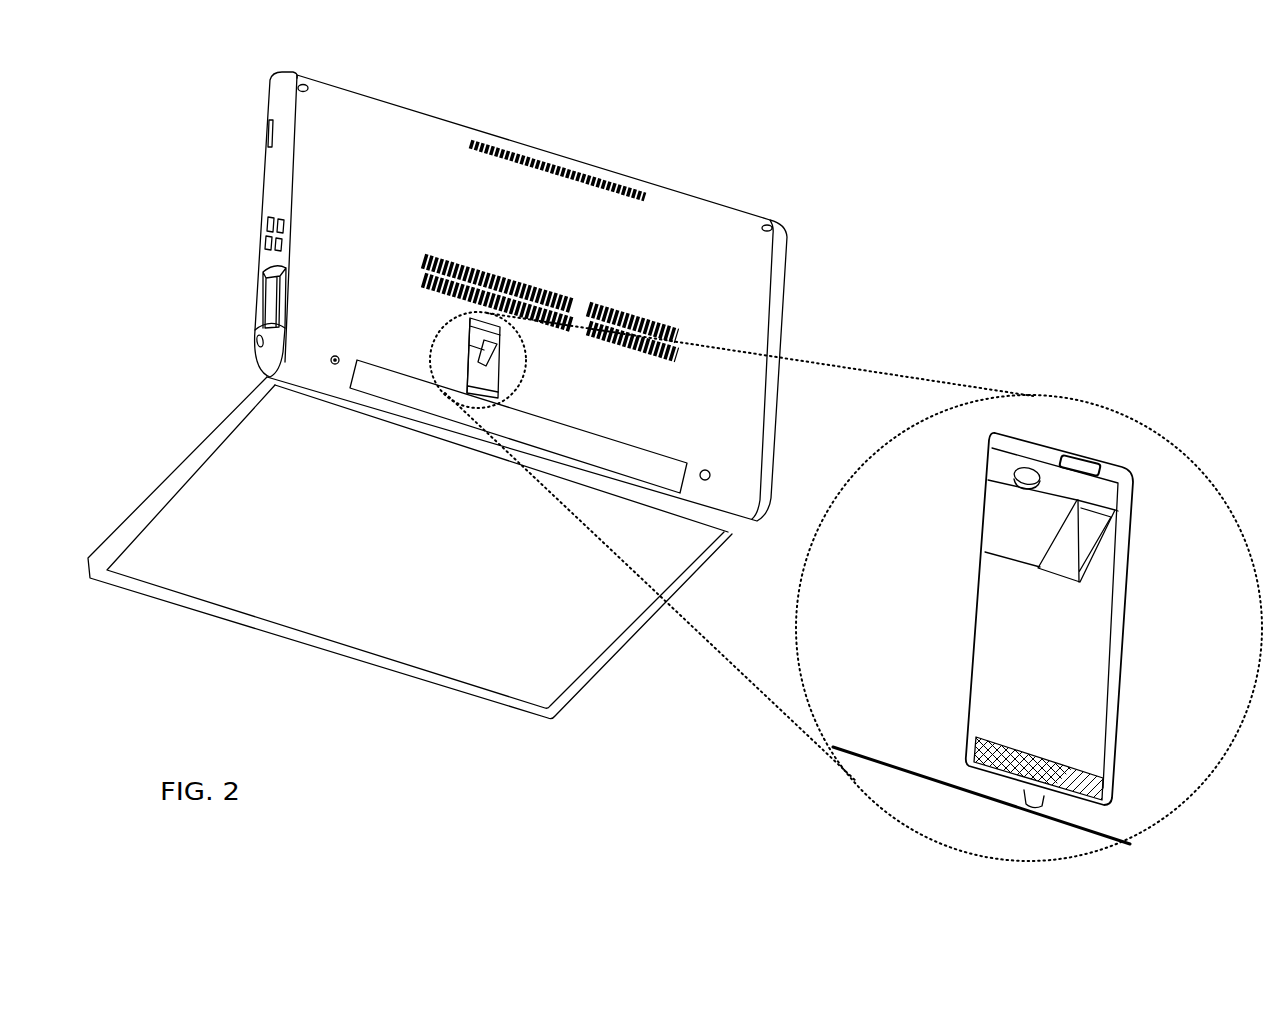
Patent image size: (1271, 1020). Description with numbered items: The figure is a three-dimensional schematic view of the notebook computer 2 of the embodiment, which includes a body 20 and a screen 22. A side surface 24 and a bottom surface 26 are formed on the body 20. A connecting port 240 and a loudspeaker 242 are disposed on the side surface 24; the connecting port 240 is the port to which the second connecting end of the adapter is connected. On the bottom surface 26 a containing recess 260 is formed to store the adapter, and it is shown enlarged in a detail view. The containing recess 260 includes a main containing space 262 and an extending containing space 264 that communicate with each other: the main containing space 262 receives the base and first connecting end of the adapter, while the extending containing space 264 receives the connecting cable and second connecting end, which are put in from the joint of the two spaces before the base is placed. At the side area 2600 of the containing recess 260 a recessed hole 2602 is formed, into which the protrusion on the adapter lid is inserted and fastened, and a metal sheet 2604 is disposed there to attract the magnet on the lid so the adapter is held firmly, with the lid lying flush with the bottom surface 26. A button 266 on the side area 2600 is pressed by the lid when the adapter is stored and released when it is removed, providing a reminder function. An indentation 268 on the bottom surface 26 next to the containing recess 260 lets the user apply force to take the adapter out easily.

The notebook computer 2 is at (237, 88).
The body 20 is at (355, 90).
The screen 22 is at (198, 437).
The side surface 24 is at (282, 184).
The connecting port 240 is at (268, 277).
The loudspeaker 242 is at (267, 223).
The bottom surface 26 is at (692, 223).
The containing recess 260 is at (977, 618).
The side area 2600 is at (1043, 460).
The recessed hole 2602 is at (1080, 457).
The main containing space 262 is at (1040, 662).
The extending containing space 264 is at (1073, 542).
The button 266 is at (1013, 465).
The metal sheet 2604 is at (1108, 792).
The indentation 268 is at (1027, 800).